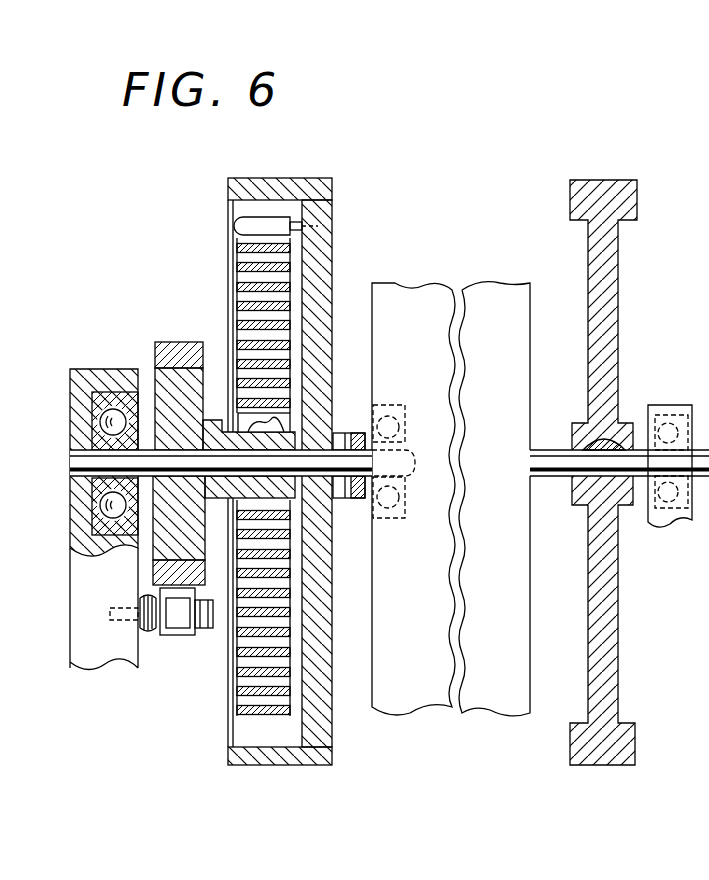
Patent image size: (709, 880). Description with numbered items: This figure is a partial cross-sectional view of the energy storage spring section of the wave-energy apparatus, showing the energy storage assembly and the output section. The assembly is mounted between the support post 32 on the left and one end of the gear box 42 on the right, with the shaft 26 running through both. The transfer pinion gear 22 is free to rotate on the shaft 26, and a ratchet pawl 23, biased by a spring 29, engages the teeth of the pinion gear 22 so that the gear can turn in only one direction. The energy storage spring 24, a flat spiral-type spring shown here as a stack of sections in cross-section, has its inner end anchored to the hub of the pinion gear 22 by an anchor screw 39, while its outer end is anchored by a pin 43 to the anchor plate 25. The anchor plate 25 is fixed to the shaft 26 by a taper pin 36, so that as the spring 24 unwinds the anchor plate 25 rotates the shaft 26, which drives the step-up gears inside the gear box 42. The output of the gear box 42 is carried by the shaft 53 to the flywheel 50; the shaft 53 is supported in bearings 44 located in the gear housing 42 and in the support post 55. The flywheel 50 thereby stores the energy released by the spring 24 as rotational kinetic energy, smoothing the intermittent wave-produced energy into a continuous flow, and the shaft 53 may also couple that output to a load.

The transfer pinion gear 22 is at (192, 340).
The ratchet pawl 23 is at (181, 635).
The energy storage spring 24 is at (250, 283).
The anchor plate 25 is at (323, 232).
The shaft 26 is at (372, 464).
The spring 29 is at (150, 606).
The support post 32 is at (108, 664).
The taper pin 36 is at (345, 433).
The anchor screw 39 is at (290, 426).
The gear box 42 is at (423, 290).
The pin 43 is at (237, 226).
The bearings 44 is at (126, 542).
The flywheel 50 is at (630, 196).
The shaft 53 is at (540, 466).
The support post 55 is at (655, 522).